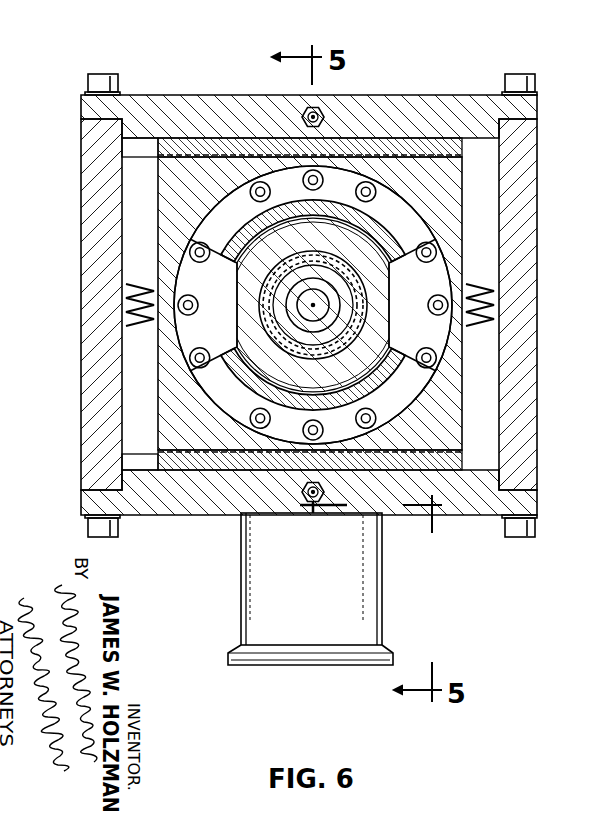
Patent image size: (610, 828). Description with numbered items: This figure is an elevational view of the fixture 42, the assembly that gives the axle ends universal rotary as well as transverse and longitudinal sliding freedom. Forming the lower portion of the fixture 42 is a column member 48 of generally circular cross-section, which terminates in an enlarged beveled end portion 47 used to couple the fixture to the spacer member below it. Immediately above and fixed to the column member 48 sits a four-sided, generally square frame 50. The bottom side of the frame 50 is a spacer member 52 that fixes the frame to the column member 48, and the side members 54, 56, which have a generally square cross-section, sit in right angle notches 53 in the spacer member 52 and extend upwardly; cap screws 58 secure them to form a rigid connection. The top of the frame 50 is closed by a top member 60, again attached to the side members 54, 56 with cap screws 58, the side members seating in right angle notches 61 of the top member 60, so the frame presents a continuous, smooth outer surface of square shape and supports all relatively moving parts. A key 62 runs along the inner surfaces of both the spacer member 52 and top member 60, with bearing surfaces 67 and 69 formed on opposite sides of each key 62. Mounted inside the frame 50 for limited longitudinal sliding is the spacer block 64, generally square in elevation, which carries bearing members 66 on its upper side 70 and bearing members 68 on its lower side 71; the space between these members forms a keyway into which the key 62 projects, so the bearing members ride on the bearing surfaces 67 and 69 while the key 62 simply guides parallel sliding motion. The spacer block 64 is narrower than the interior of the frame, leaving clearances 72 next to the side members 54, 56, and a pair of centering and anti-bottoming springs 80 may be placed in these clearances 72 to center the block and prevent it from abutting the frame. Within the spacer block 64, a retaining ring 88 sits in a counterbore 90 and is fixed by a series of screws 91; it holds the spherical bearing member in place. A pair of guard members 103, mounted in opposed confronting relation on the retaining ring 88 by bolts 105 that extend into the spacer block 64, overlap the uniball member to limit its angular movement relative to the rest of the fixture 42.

The fixture 42 is at (547, 382).
The enlarged beveled end portion 47 is at (387, 655).
The column member 48 is at (368, 580).
The frame 50 is at (544, 191).
The spacer member 52 is at (446, 513).
The right angle notches 53 is at (84, 484).
The side member 54 is at (520, 313).
The side member 56 is at (100, 306).
The cap screws 58 is at (517, 76).
The top member 60 is at (371, 101).
The right angle notches 61 is at (92, 121).
The key 62 is at (466, 152).
The spacer block 64 is at (445, 405).
The bearing members 66 is at (445, 150).
The bearing surface 67 is at (122, 457).
The bearing members 68 is at (450, 432).
The bearing surface 69 is at (122, 150).
The upper side 70 is at (158, 157).
The lower side 71 is at (158, 455).
The clearance 72 is at (135, 212).
The centering and anti-bottoming springs 80 is at (134, 286).
The retaining ring 88 is at (440, 380).
The counterbore 90 is at (420, 226).
The screws 91 is at (374, 189).
The guard members 103 is at (440, 258).
The bolts 105 is at (436, 246).